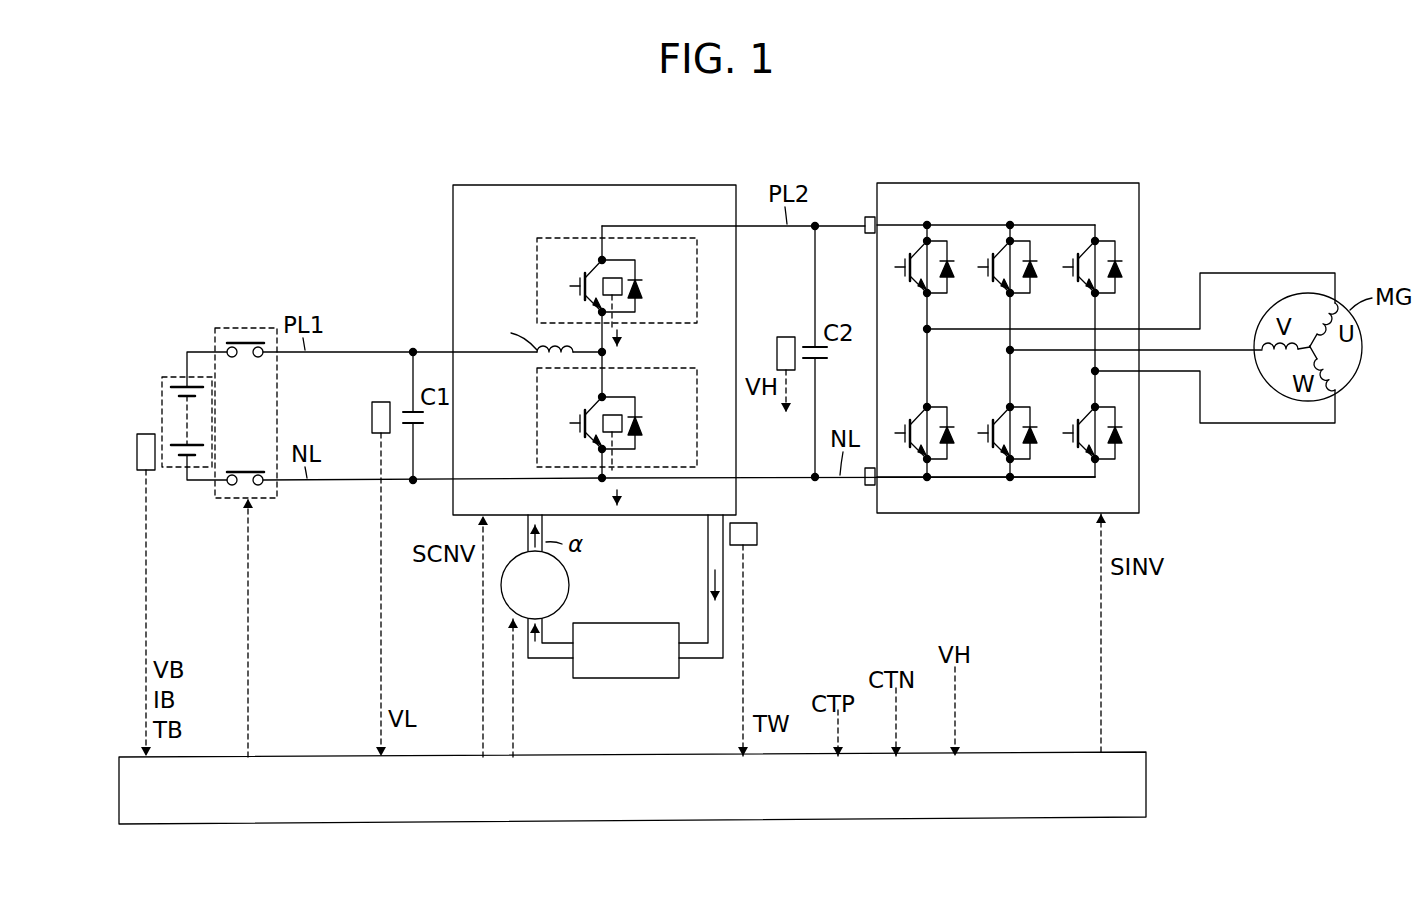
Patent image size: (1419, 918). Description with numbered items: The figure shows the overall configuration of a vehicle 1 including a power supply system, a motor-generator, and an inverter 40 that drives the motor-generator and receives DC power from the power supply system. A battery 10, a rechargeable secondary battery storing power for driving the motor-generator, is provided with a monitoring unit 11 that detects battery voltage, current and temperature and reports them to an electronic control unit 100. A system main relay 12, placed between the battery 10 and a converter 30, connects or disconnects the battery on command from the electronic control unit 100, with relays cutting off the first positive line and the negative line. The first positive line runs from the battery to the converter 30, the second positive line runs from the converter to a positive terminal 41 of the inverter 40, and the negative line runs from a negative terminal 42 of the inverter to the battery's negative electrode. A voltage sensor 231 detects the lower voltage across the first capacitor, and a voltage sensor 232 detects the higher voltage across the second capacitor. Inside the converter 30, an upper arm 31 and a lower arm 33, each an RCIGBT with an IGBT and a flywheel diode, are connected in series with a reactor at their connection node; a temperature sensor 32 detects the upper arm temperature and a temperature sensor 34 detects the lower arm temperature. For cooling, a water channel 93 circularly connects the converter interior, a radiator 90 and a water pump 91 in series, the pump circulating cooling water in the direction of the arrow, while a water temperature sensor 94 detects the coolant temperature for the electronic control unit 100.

The vehicle 1 is at (1222, 125).
The battery 10 is at (172, 375).
The monitoring unit 11 is at (146, 432).
The system main relay 12 is at (249, 327).
The converter 30 is at (594, 335).
The upper arm 31 is at (587, 284).
The temperature sensor 32 is at (615, 278).
The lower arm 33 is at (587, 419).
The temperature sensor 34 is at (615, 415).
The inverter 40 is at (975, 183).
The positive terminal 41 is at (868, 215).
The negative terminal 42 is at (870, 488).
The radiator 90 is at (625, 623).
The water pump 91 is at (570, 585).
The water channel 93 is at (706, 562).
The water temperature sensor 94 is at (757, 534).
The electronic control unit 100 is at (1146, 785).
The voltage sensor 231 is at (381, 400).
The voltage sensor 232 is at (786, 335).